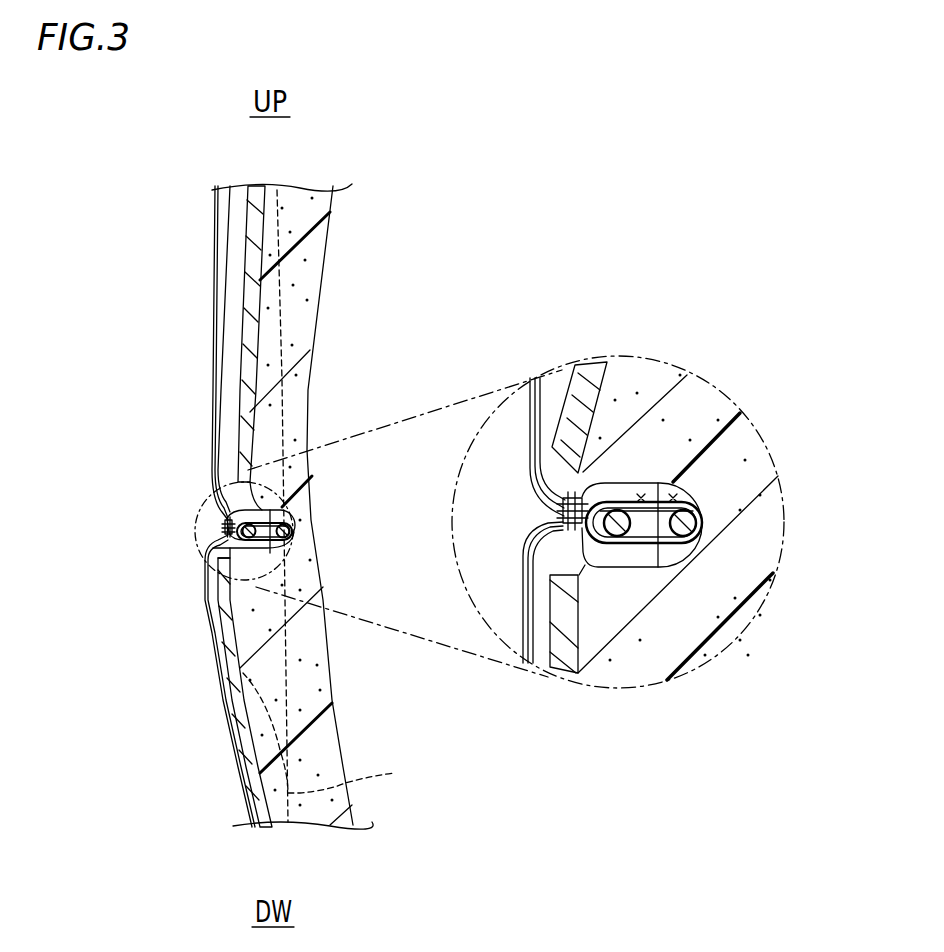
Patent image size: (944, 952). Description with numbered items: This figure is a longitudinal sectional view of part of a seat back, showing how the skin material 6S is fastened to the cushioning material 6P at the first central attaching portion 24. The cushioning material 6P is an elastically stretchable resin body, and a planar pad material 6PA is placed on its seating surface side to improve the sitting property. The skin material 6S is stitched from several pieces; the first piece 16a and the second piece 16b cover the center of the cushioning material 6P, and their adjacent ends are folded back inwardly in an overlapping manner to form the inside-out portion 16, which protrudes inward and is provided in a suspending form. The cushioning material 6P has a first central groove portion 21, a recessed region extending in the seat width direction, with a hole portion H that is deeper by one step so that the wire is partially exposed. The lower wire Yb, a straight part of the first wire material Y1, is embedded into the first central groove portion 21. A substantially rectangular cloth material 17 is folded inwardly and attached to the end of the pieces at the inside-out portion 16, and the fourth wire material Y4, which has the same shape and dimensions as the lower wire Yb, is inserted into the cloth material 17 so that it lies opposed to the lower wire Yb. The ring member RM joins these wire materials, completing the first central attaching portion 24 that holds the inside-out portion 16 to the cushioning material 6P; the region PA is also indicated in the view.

The cushioning material 6P is at (318, 258).
The planar pad material 6PA is at (250, 338).
The skin material 6S is at (165, 506).
The inside-out portion 16 is at (227, 521).
The first piece 16a is at (222, 703).
The second piece 16b is at (215, 287).
The cloth material 17 is at (605, 552).
The first central groove portion 21 is at (641, 492).
The first central attaching portion 24 is at (855, 760).
The hole portion H is at (707, 492).
The pad area PA is at (336, 733).
The ring member RM is at (672, 543).
The first wire material Y1 is at (238, 563).
The fourth wire material Y4 is at (199, 539).
The lower wire Yb is at (700, 545).